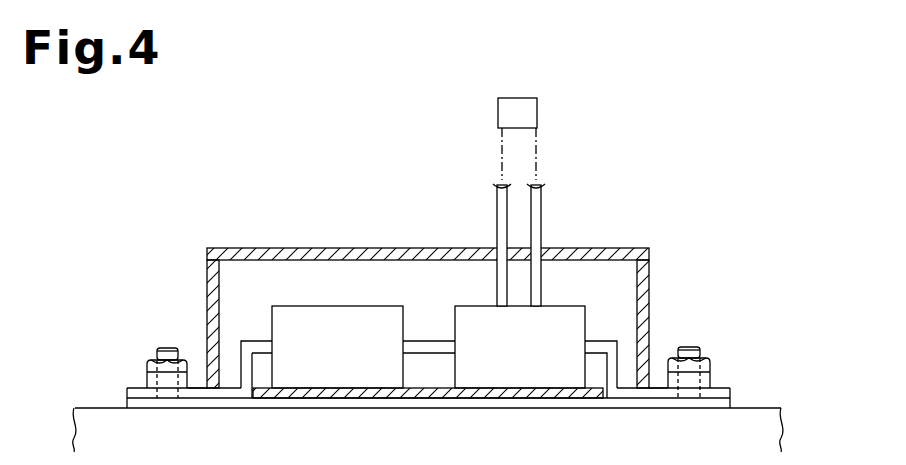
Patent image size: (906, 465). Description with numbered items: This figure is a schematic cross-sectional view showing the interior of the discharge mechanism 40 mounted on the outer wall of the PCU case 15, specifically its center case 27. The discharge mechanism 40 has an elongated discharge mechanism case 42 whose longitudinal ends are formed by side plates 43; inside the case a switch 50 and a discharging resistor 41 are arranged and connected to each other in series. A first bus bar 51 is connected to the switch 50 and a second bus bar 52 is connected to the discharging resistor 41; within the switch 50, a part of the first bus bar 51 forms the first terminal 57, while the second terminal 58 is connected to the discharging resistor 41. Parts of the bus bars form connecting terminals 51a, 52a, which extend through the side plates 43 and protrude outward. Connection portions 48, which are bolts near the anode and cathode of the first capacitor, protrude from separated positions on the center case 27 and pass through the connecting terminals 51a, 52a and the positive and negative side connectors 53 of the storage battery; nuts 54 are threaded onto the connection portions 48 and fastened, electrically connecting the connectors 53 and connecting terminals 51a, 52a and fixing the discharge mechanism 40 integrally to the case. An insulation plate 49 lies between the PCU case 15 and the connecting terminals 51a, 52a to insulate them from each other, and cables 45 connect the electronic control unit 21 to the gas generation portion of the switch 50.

The electronic control unit 21 is at (517, 139).
The center case 27 is at (405, 411).
The PCU case 15 is at (80, 408).
The discharge mechanism 40 is at (427, 287).
The discharging resistor 41 is at (386, 308).
The discharge mechanism case 42 is at (427, 304).
The side plates 43 is at (207, 273).
The cables 45 is at (507, 203).
The connection portion (bolt) 48 is at (170, 347).
The insulation plate 49 is at (730, 403).
The switch 50 is at (472, 312).
The first bus bar 51 is at (523, 404).
The connecting terminal 51a is at (730, 384).
The second bus bar 52 is at (166, 393).
The connecting terminal 52a is at (127, 387).
The connector 53 is at (149, 375).
The nuts 54 is at (197, 388).
The first terminal 57 is at (600, 341).
The second terminal 58 is at (432, 347).